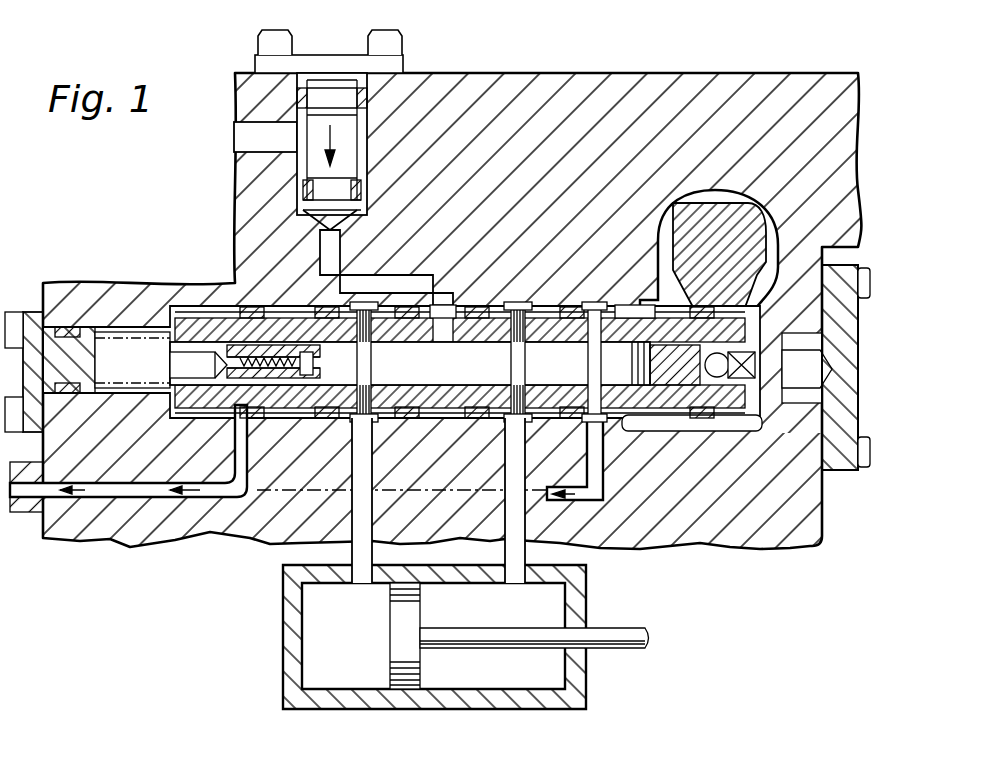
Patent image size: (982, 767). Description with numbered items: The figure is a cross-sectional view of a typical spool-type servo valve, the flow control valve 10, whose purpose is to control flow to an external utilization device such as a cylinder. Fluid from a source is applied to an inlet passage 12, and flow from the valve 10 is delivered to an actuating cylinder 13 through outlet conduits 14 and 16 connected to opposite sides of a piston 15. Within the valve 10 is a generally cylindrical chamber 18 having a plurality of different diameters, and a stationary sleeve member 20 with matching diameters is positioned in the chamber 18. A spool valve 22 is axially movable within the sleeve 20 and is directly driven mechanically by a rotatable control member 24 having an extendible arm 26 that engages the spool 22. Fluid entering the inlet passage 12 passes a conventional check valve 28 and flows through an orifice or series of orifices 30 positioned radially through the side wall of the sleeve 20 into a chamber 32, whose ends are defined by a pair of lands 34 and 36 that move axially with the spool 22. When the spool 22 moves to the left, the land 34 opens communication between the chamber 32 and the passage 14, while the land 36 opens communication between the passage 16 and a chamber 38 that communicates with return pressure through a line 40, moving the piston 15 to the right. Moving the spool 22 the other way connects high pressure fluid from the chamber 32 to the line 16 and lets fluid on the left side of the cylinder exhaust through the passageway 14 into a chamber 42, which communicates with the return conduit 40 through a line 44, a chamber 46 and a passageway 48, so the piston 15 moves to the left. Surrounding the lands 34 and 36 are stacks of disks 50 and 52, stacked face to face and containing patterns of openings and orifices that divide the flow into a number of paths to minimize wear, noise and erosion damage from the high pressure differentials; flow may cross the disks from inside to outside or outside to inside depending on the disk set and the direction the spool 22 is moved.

The flow control valve 10 is at (425, 60).
The inlet passage 12 is at (240, 145).
The actuating cylinder 13 is at (348, 710).
The outlet conduit 14 is at (352, 552).
The piston 15 is at (420, 688).
The outlet conduit 16 is at (527, 552).
The cylindrical chamber 18 is at (630, 308).
The sleeve member 20 is at (522, 312).
The spool valve 22 is at (452, 373).
The rotatable control member 24 is at (722, 215).
The extendible arm 26 is at (770, 232).
The check valve 28 is at (312, 160).
The orifices 30 is at (446, 325).
The chamber 32 is at (445, 300).
The land 34 is at (372, 366).
The land 36 is at (511, 368).
The chamber 38 is at (586, 392).
The return line 40 is at (604, 485).
The chamber 42 is at (312, 402).
The line 44 is at (250, 408).
The chamber 46 is at (188, 410).
The passageway 48 is at (233, 462).
The stack of disks 50 is at (362, 318).
The stack of disks 52 is at (531, 418).